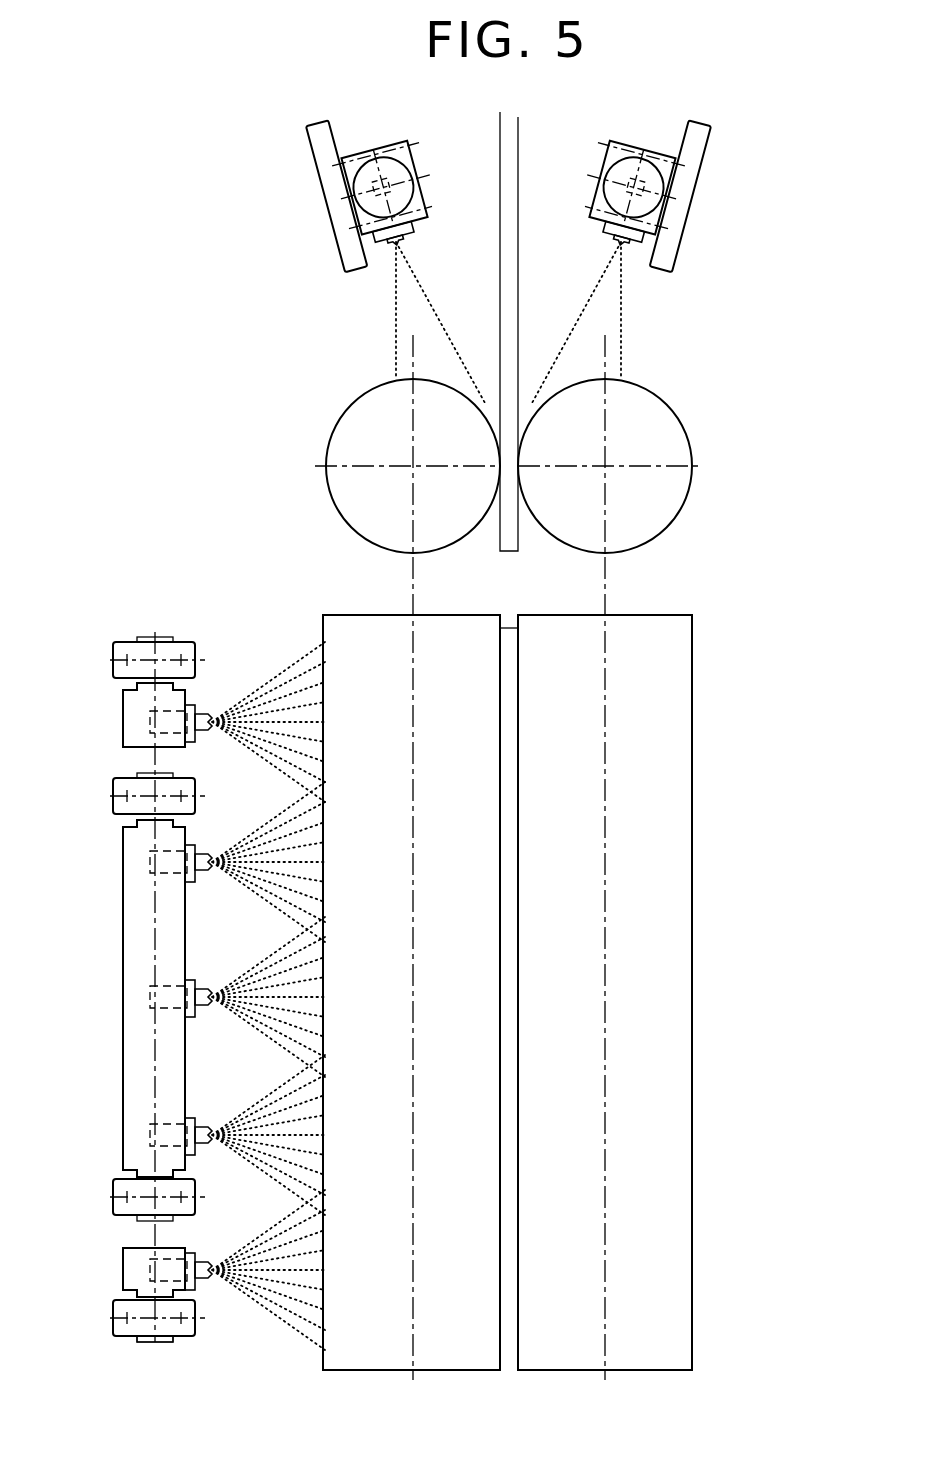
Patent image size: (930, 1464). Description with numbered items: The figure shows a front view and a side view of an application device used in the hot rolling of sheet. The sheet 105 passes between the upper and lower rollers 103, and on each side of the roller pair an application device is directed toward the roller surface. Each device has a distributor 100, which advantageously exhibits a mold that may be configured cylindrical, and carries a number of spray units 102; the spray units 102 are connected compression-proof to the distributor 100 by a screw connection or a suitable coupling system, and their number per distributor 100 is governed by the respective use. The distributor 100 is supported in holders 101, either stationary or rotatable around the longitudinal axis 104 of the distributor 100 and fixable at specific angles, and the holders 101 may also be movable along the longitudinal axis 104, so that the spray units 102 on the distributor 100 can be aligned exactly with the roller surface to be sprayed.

The distributor 100 is at (356, 146).
The holders 101 is at (318, 198).
The spray units 102 is at (386, 252).
The rollers 103 is at (260, 466).
The longitudinal axis of the distributor 104 is at (155, 1346).
The sheet 105 is at (495, 322).